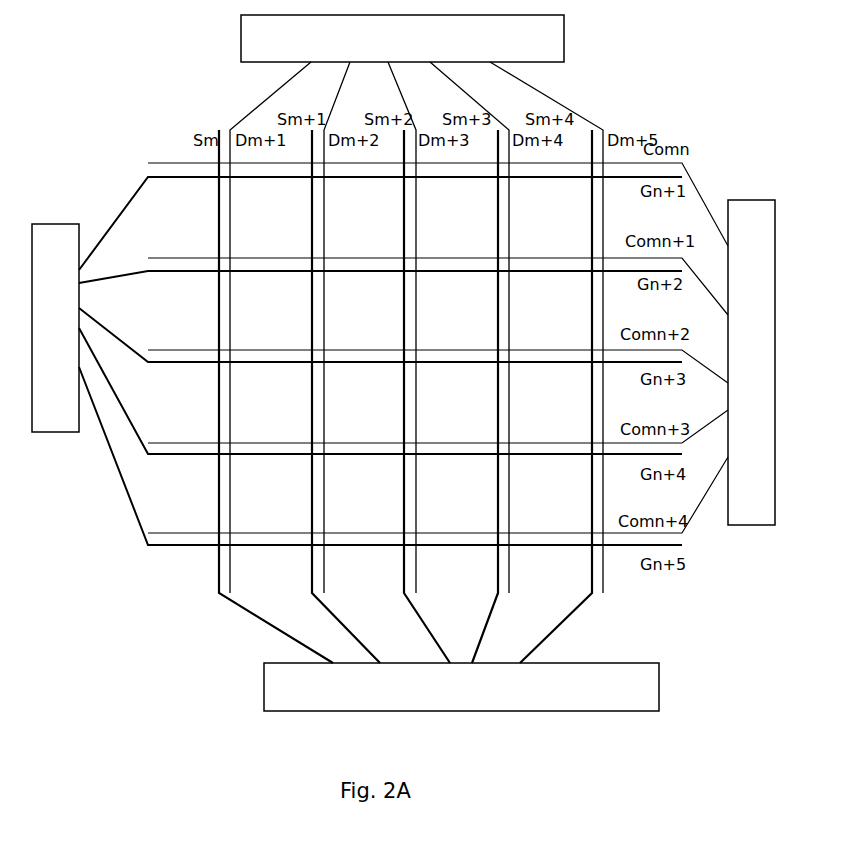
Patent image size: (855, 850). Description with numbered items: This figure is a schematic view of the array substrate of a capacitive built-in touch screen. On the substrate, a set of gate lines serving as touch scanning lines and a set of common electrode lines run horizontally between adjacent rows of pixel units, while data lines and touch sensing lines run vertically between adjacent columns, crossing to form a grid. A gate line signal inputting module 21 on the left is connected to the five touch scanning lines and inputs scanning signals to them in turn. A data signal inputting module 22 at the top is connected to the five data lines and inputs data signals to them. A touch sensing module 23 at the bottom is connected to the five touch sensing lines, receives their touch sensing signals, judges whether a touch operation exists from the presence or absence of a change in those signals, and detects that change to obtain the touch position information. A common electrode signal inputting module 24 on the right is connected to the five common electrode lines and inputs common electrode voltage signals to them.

The gate line signal inputting module 21 is at (94, 200).
The data signal inputting module 22 is at (603, 22).
The touch sensing module 23 is at (659, 685).
The common electrode signal inputting module 24 is at (752, 200).